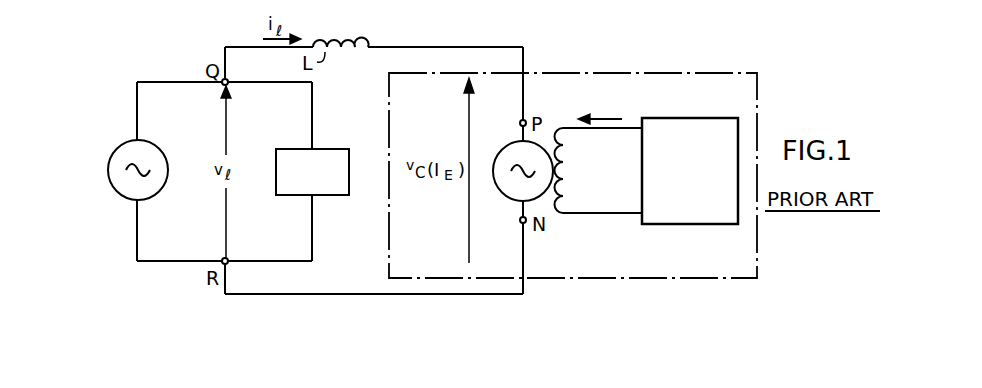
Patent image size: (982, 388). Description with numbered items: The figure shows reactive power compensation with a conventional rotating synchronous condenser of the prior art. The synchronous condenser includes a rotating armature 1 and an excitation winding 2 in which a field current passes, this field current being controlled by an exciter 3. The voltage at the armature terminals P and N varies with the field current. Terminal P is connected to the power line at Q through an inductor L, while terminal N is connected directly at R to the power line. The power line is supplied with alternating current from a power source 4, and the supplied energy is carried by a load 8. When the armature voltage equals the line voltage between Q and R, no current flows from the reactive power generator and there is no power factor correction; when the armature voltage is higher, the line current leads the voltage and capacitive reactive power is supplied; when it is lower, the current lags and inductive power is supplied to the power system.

The rotating armature 1 is at (508, 147).
The excitation winding 2 is at (570, 170).
The exciter 3 is at (705, 118).
The power source 4 is at (118, 150).
The load 8 is at (328, 149).